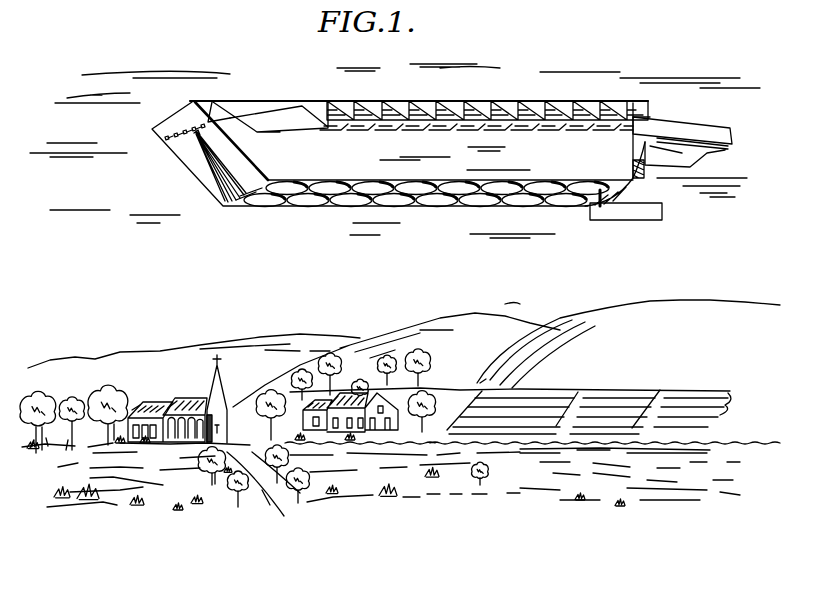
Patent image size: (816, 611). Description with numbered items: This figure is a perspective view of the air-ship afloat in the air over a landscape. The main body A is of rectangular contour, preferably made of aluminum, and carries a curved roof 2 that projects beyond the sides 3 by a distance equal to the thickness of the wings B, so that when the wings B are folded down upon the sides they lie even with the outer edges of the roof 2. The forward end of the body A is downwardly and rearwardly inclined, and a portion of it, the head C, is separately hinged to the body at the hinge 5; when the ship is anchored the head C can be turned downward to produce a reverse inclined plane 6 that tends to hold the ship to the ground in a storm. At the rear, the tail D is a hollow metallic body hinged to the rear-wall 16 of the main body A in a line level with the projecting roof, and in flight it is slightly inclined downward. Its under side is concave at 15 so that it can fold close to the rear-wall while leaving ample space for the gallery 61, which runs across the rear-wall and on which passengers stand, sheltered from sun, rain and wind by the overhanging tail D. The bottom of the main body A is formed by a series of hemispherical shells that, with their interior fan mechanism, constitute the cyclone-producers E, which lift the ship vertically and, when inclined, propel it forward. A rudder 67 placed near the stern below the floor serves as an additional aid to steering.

The roof 2 is at (153, 121).
The hinge 5 is at (185, 128).
The reverse inclined plane 6 is at (203, 163).
The sides 3 is at (414, 141).
The rear-wall 16 is at (633, 139).
The gallery 61 is at (646, 168).
The concave under side of tail 15 is at (702, 154).
The rudder 67 is at (639, 206).
The main body A is at (345, 132).
The wings B is at (419, 104).
The head C is at (369, 147).
The tail D is at (682, 138).
The cyclone-producers E is at (396, 203).